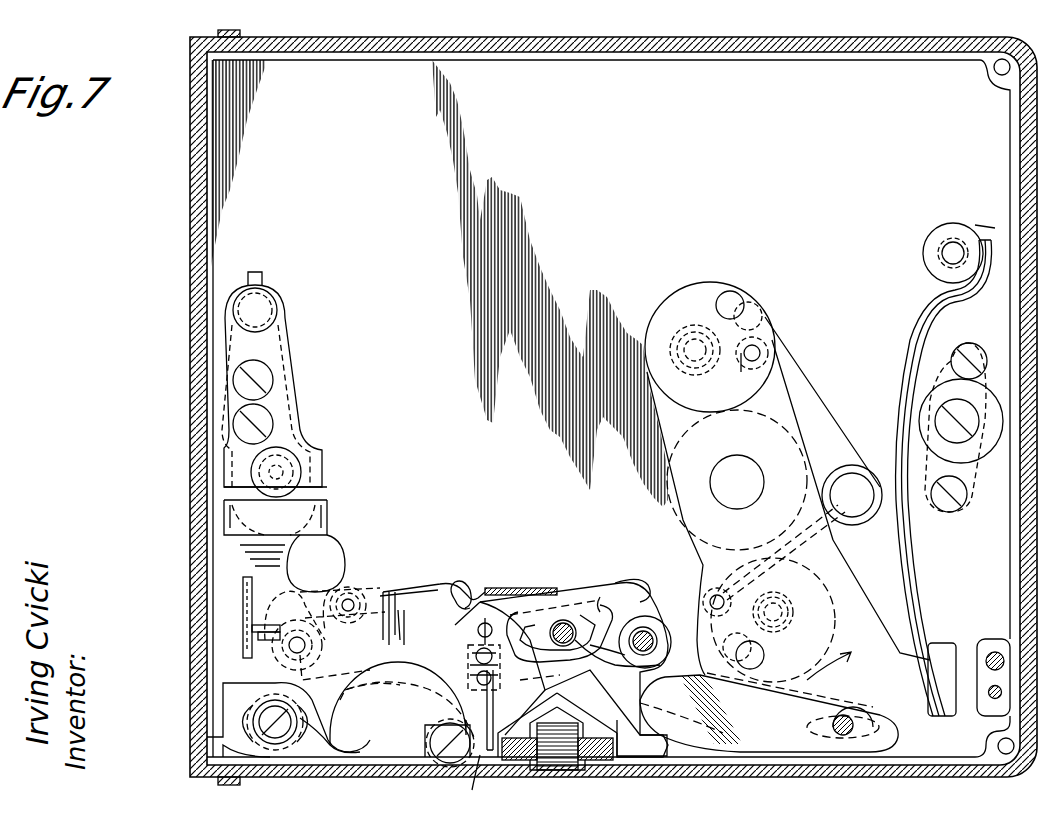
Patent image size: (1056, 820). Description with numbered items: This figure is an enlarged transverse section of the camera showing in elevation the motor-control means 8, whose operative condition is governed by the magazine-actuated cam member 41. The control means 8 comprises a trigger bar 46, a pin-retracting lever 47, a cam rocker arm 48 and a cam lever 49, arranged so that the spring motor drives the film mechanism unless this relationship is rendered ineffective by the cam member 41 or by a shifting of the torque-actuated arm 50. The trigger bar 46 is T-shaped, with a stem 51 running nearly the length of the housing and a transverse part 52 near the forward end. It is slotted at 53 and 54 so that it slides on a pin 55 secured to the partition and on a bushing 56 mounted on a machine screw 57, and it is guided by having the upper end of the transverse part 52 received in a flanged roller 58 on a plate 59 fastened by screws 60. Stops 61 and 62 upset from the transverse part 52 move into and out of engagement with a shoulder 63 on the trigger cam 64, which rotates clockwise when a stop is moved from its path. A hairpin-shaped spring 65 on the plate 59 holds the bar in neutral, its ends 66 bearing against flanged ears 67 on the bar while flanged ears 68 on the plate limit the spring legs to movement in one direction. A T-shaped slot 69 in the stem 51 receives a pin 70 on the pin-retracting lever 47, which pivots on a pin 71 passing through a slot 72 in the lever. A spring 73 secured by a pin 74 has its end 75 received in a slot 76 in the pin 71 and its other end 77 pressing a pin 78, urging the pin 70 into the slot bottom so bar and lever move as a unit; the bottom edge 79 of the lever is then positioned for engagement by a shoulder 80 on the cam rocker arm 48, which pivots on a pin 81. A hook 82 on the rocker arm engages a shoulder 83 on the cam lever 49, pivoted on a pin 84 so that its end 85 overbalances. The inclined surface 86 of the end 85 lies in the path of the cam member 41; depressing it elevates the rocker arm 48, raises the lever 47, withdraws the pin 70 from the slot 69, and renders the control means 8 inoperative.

The motor-control means 8 is at (508, 577).
The cam member 41 is at (553, 588).
The trigger bar 46 is at (402, 703).
The pin-retracting lever 47 is at (342, 690).
The cam rocker arm 48 is at (583, 731).
The cam lever 49 is at (580, 622).
The torque-actuated arm 50 is at (682, 522).
The stem 51 is at (598, 650).
The transverse part 52 is at (292, 563).
The slot 53 is at (880, 735).
The slot 54 is at (320, 742).
The pin 55 is at (835, 722).
The bushing 56 is at (262, 704).
The machine screw 57 is at (265, 692).
The flanged roller 58 is at (300, 466).
The plate 59 is at (260, 352).
The screws 60 is at (268, 425).
The stop 61 is at (243, 604).
The stop 62 is at (258, 638).
The shoulder 63 is at (243, 580).
The trigger cam 64 is at (252, 628).
The hairpin-shaped spring 65 is at (318, 418).
The ends 66 is at (325, 470).
The flanged ears 67 is at (273, 523).
The flanged ears 68 is at (327, 493).
The T-shaped slot 69 is at (468, 655).
The pin 70 is at (501, 710).
The pin 71 is at (312, 636).
The slot 72 is at (322, 648).
The spring 73 is at (400, 590).
The pin 74 is at (350, 592).
The end 75 is at (295, 615).
The slot 76 is at (355, 608).
The end 77 is at (465, 585).
The pin 78 is at (399, 618).
The bottom edge 79 is at (437, 728).
The shoulder 80 is at (480, 790).
The pin 81 is at (648, 632).
The hook 82 is at (559, 623).
The shoulder 83 is at (520, 640).
The pin 84 is at (617, 658).
The end 85 is at (630, 583).
The inclined surface 86 is at (605, 595).